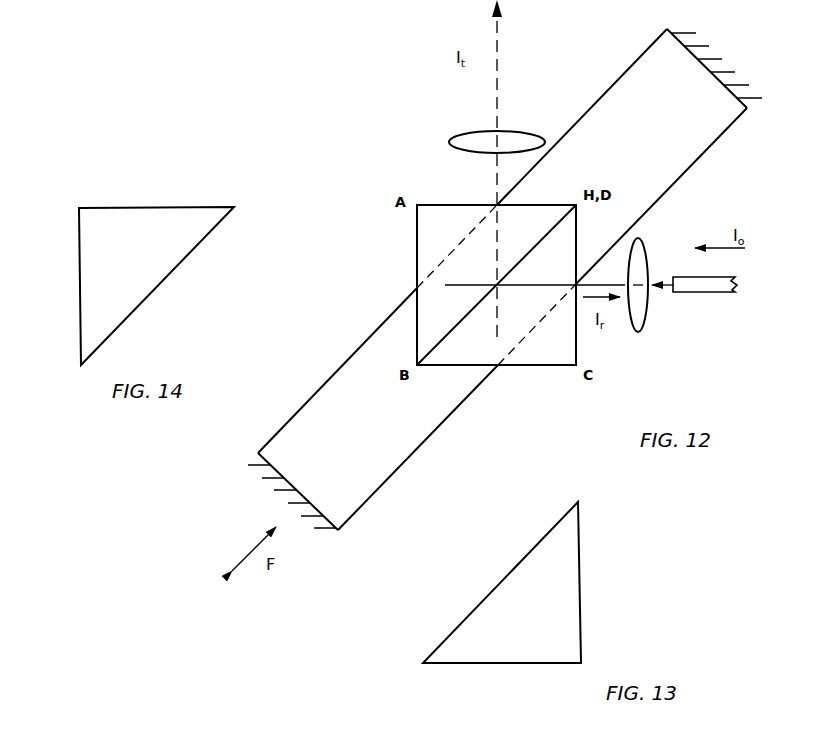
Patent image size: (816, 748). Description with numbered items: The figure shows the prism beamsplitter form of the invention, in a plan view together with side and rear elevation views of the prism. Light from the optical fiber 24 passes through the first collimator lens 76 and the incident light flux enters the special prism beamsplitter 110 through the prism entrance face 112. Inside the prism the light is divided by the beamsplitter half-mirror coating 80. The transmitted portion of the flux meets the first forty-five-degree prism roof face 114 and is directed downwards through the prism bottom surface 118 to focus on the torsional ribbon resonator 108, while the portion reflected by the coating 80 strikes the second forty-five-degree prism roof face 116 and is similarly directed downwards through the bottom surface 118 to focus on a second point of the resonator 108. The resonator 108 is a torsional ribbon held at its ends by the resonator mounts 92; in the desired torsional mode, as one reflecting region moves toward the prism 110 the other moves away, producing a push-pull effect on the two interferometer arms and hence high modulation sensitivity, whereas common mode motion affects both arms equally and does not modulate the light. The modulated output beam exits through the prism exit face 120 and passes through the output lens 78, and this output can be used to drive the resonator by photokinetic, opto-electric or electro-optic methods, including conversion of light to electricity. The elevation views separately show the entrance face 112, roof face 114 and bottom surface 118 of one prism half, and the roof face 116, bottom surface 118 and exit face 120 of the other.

In FIG. 12, the optical fiber 24 is at (715, 294).
In FIG. 12, the first collimator lens 76 is at (645, 255).
In FIG. 12, the output lens 78 is at (515, 132).
In FIG. 12, the beamsplitter half-mirror coating 80 is at (448, 343).
In FIG. 12, the resonator mounts 92 is at (505, 300).
In FIG. 12, the torsional ribbon resonator 108 is at (502, 279).
In FIG. 12, the prism beamsplitter 110 is at (576, 367).
In FIG. 12, the prism entrance face 112 is at (581, 316).
In FIG. 13, the prism entrance face 112 is at (582, 586).
In FIG. 12, the first 45-degree prism roof face 114 is at (444, 232).
In FIG. 13, the first 45-degree prism roof face 114 is at (510, 567).
In FIG. 12, the second 45-degree prism roof face 116 is at (538, 353).
In FIG. 14, the second 45-degree prism roof face 116 is at (168, 280).
In FIG. 13, the prism bottom surface 118 is at (482, 665).
In FIG. 14, the prism bottom surface 118 is at (78, 300).
In FIG. 12, the prism exit face 120 is at (433, 205).
In FIG. 14, the prism exit face 120 is at (122, 206).